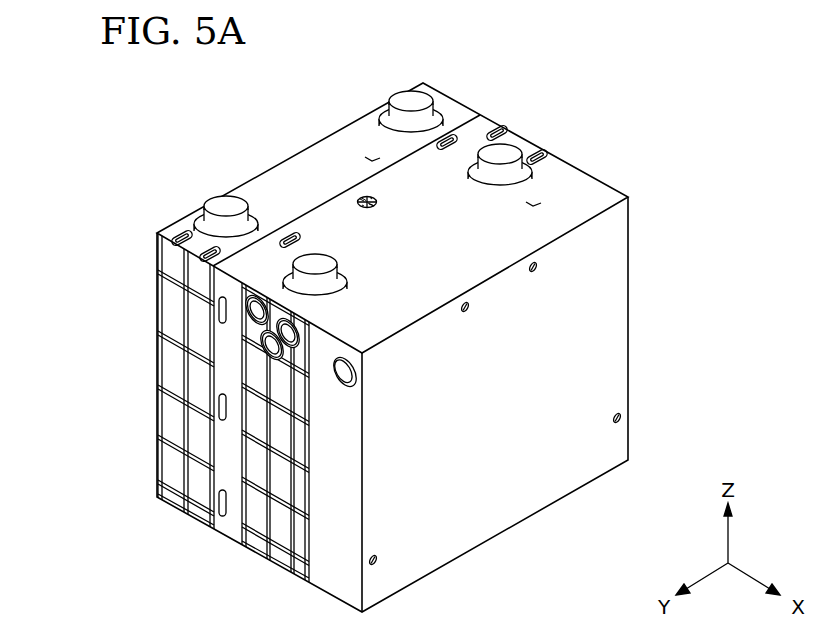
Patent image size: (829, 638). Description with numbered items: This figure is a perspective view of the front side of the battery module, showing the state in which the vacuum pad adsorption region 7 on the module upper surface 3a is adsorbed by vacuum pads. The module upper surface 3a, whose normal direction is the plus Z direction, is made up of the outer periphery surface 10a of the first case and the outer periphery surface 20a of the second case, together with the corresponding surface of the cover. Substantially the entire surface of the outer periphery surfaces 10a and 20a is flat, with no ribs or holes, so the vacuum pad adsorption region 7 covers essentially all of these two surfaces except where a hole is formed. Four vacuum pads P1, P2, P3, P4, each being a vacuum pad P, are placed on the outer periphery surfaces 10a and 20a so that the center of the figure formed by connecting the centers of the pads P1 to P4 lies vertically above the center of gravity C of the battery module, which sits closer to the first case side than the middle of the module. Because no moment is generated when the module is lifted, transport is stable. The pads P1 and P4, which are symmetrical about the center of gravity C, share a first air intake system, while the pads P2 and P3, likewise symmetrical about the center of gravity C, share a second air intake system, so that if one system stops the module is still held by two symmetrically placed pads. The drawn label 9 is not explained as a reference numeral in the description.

The vacuum pad P1 is at (222, 205).
The vacuum pad P2 is at (316, 264).
The vacuum pad P3 is at (411, 104).
The vacuum pad P4 is at (511, 158).
The vacuum pad P is at (349, 141).
The terminal 9 is at (203, 312).
The center of gravity C is at (366, 196).
The outer periphery surface 10a is at (313, 167).
The outer periphery surface 20a is at (312, 230).
The vacuum pad adsorption region 7 is at (392, 317).
The module upper surface 3a is at (417, 240).